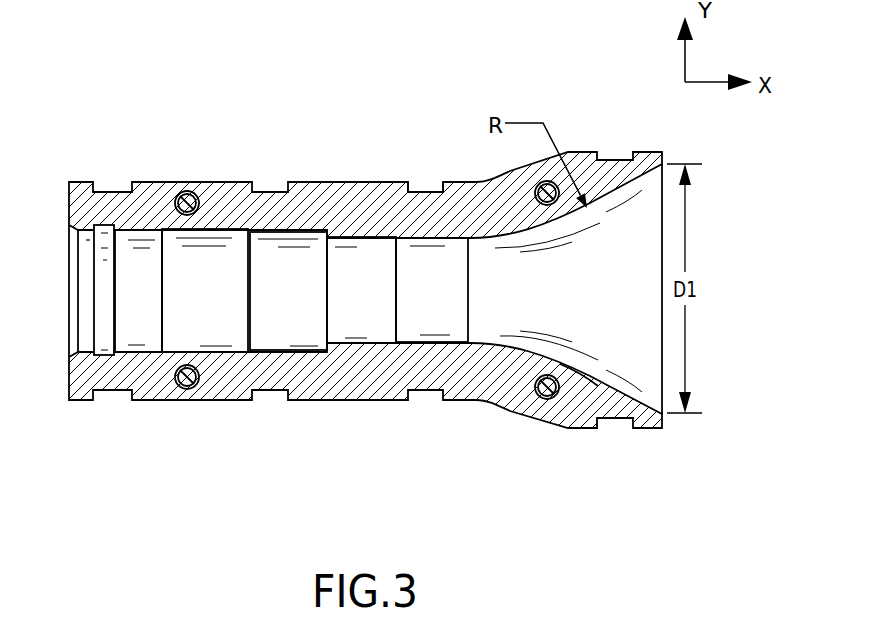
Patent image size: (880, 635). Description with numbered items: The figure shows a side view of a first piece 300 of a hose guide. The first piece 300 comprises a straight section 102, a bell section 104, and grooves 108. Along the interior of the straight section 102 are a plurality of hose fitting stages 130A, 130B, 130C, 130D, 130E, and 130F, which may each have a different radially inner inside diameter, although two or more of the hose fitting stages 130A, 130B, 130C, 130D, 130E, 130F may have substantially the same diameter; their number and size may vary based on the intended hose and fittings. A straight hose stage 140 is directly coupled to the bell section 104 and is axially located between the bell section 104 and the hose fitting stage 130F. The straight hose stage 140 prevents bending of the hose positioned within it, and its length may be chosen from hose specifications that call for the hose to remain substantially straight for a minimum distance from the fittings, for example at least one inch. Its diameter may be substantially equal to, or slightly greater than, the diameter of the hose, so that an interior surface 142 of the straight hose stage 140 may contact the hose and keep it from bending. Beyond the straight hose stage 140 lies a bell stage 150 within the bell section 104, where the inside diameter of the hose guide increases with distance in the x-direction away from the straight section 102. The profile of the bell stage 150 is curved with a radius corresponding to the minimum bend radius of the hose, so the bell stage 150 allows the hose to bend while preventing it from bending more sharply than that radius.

The first piece 300 is at (353, 260).
The straight section 102 is at (258, 145).
The bell section 104 is at (561, 116).
The grooves 108 is at (420, 192).
The interior surface 142 is at (403, 238).
The hose fitting stage 130A is at (80, 352).
The hose fitting stage 130B is at (104, 356).
The hose fitting stage 130C is at (150, 352).
The hose fitting stage 130D is at (205, 352).
The hose fitting stage 130E is at (295, 350).
The hose fitting stage 130F is at (358, 343).
The straight hose stage 140 is at (440, 341).
The bell stage 150 is at (577, 365).